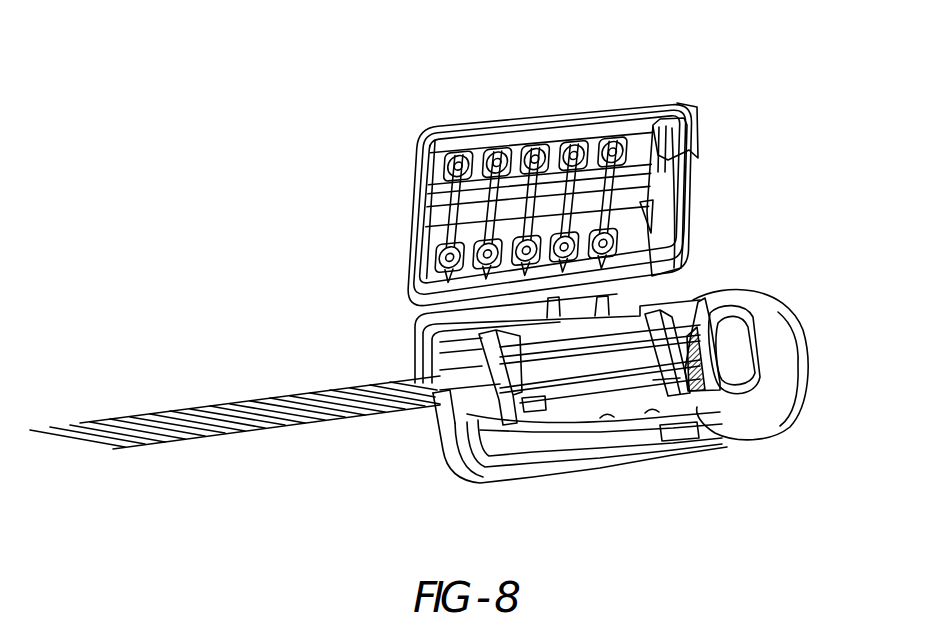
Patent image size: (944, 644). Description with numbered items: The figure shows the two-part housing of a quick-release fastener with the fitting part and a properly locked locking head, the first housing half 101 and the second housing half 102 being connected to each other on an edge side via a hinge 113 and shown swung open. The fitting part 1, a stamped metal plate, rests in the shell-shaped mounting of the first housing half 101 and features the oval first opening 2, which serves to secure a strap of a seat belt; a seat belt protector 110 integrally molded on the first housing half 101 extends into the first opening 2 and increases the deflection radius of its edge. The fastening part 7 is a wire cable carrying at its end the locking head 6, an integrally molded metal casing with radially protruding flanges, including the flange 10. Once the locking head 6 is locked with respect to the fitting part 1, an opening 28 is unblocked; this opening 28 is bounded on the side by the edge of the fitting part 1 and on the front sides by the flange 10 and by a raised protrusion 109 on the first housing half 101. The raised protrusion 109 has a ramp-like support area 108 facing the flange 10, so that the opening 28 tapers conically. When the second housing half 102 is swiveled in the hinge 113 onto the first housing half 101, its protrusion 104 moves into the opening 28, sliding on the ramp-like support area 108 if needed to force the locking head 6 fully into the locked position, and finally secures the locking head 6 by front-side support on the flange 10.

The fitting part 1 is at (745, 303).
The first opening 2 is at (733, 367).
The locking head 6 is at (580, 367).
The fastening part 7 is at (183, 410).
The flange 10 is at (671, 390).
The opening 28 is at (684, 320).
The first housing half 101 is at (597, 460).
The second housing half 102 is at (566, 118).
The protrusion 104 is at (672, 198).
The ramp-like support area 108 is at (695, 398).
The raised protrusion 109 is at (720, 337).
The seat belt protector 110 is at (767, 397).
The hinge 113 is at (630, 260).